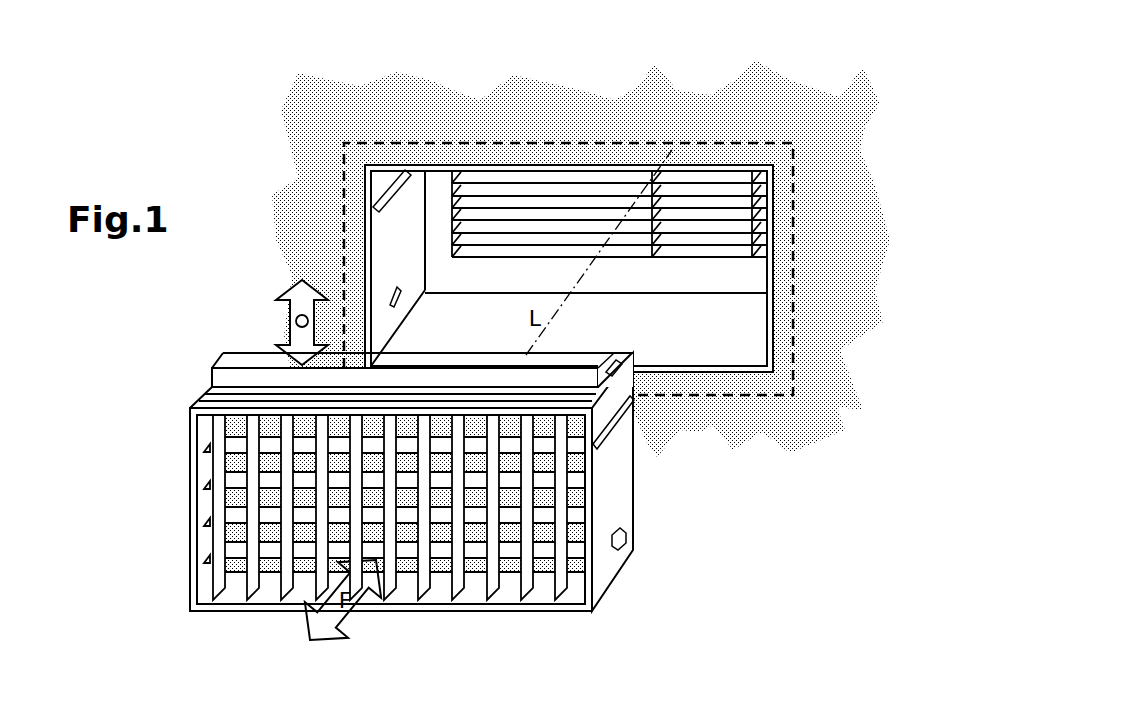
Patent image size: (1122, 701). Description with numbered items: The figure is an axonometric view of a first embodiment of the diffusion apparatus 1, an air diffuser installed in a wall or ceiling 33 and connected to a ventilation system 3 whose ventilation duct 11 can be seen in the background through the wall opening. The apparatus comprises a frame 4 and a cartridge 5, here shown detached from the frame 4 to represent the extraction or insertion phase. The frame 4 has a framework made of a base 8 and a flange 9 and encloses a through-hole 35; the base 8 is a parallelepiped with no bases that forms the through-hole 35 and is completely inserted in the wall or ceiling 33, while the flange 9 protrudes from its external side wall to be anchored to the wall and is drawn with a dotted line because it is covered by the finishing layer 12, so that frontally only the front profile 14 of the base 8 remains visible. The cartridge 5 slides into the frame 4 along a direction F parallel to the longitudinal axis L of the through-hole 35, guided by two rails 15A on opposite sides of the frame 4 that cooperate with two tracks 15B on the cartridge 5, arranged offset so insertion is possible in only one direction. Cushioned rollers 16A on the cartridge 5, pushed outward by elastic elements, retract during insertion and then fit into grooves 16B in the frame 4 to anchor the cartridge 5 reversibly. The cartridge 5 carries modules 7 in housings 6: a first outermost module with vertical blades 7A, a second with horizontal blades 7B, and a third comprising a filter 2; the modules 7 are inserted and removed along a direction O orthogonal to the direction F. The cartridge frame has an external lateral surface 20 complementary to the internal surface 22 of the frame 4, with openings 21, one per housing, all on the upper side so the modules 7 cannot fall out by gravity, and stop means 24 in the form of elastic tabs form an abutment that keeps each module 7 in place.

The diffusion apparatus 1 is at (327, 272).
The filter 2 is at (334, 539).
The ventilation system 3 is at (598, 192).
The frame 4 is at (413, 190).
The cartridge 5 is at (377, 524).
The housings 6 is at (210, 395).
The modules 7 is at (220, 357).
The vertical blades 7A is at (460, 580).
The horizontal blades 7B is at (240, 518).
The base 8 is at (708, 343).
The flange 9 is at (781, 386).
The ventilation duct 11 is at (752, 275).
The finishing layer 12 is at (833, 278).
The front profile 14 is at (775, 332).
The rails 15A is at (372, 190).
The tracks 15B is at (635, 399).
The cushioned rollers 16A is at (632, 552).
The grooves 16B is at (390, 294).
The external lateral surface 20 is at (612, 482).
The openings 21 is at (489, 404).
The internal surface 22 is at (398, 268).
The stop means 24 is at (593, 418).
The wall or ceiling 33 is at (823, 120).
The through-hole 35 is at (596, 275).